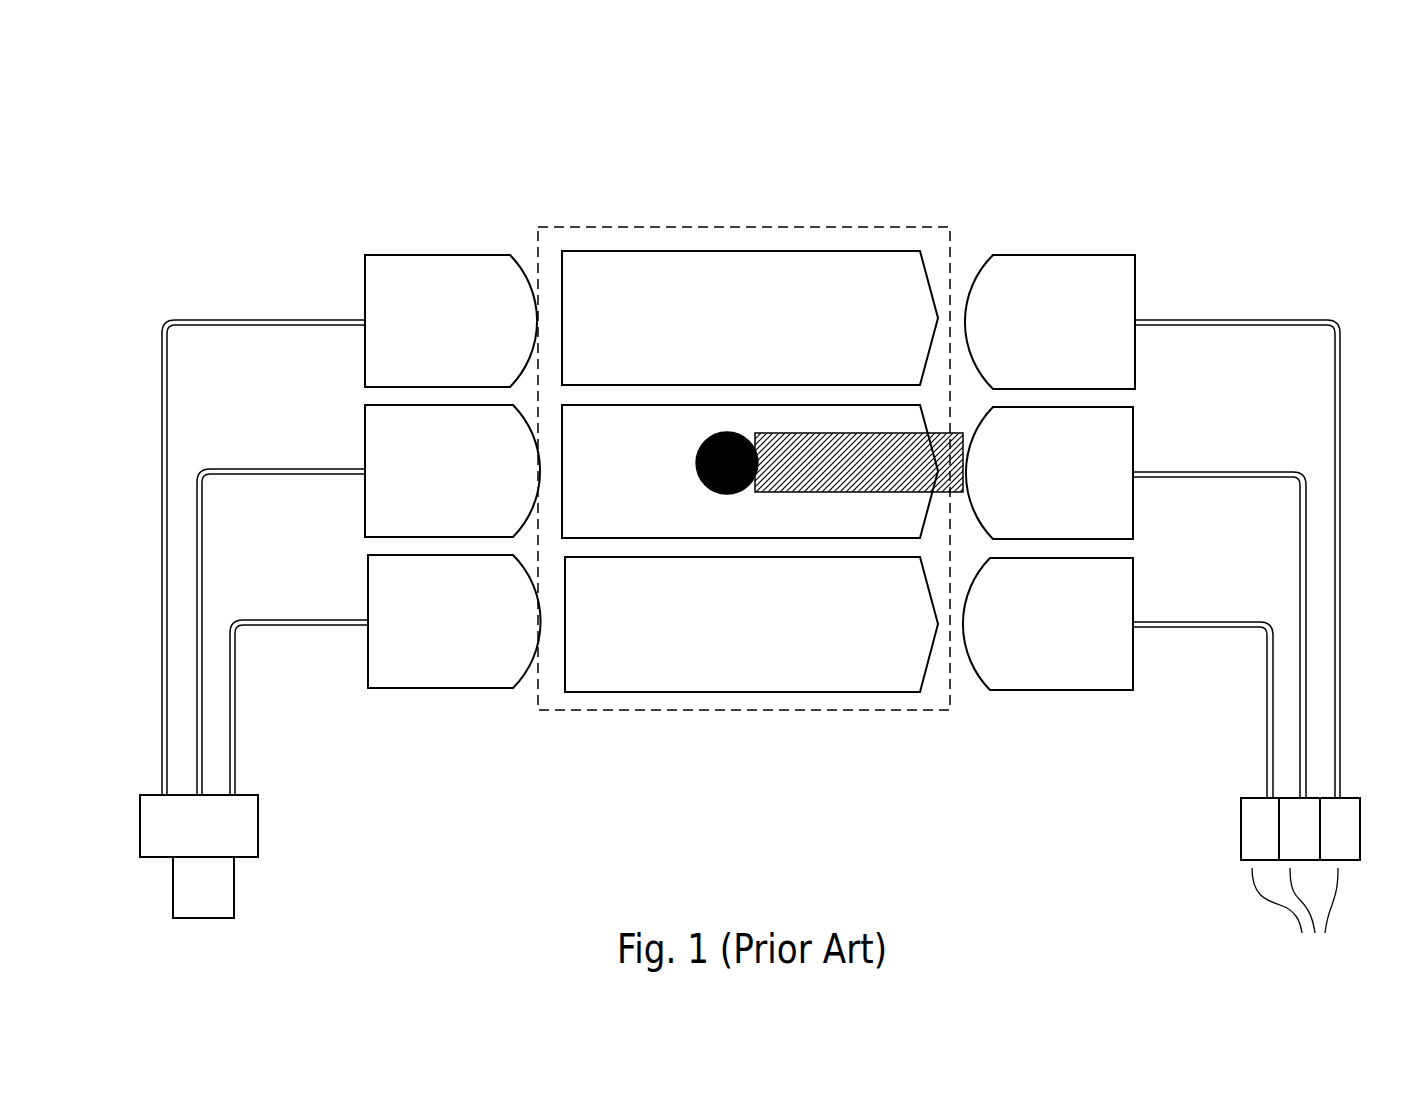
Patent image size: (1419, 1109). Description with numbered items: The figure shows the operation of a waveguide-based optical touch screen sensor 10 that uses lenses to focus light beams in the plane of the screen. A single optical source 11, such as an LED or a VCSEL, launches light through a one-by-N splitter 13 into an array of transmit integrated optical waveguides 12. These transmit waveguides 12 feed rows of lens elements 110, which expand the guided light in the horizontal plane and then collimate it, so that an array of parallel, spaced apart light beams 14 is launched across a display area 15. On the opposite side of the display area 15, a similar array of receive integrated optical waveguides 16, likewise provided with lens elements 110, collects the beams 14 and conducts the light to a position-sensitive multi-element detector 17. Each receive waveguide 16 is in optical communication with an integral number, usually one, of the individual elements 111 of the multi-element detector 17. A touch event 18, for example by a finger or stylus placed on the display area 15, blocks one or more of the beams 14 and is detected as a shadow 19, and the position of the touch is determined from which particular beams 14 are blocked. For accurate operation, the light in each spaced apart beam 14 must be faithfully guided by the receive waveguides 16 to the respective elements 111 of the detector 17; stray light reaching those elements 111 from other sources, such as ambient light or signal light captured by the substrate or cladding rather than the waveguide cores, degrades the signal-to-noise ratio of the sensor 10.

The optical touch screen sensor 10 is at (744, 425).
The optical source 11 is at (203, 887).
The transmit integrated optical waveguides 12 is at (212, 710).
The 1×N splitter 13 is at (199, 826).
The light beams 14 is at (817, 677).
The display area 15 is at (865, 225).
The receive integrated optical waveguides 16 is at (1288, 702).
The multi-element detector 17 is at (1228, 835).
The touch event 18 is at (710, 463).
The shadow 19 is at (859, 477).
The lens elements 110 is at (530, 673).
The individual elements of multi-element detector 111 is at (1295, 916).